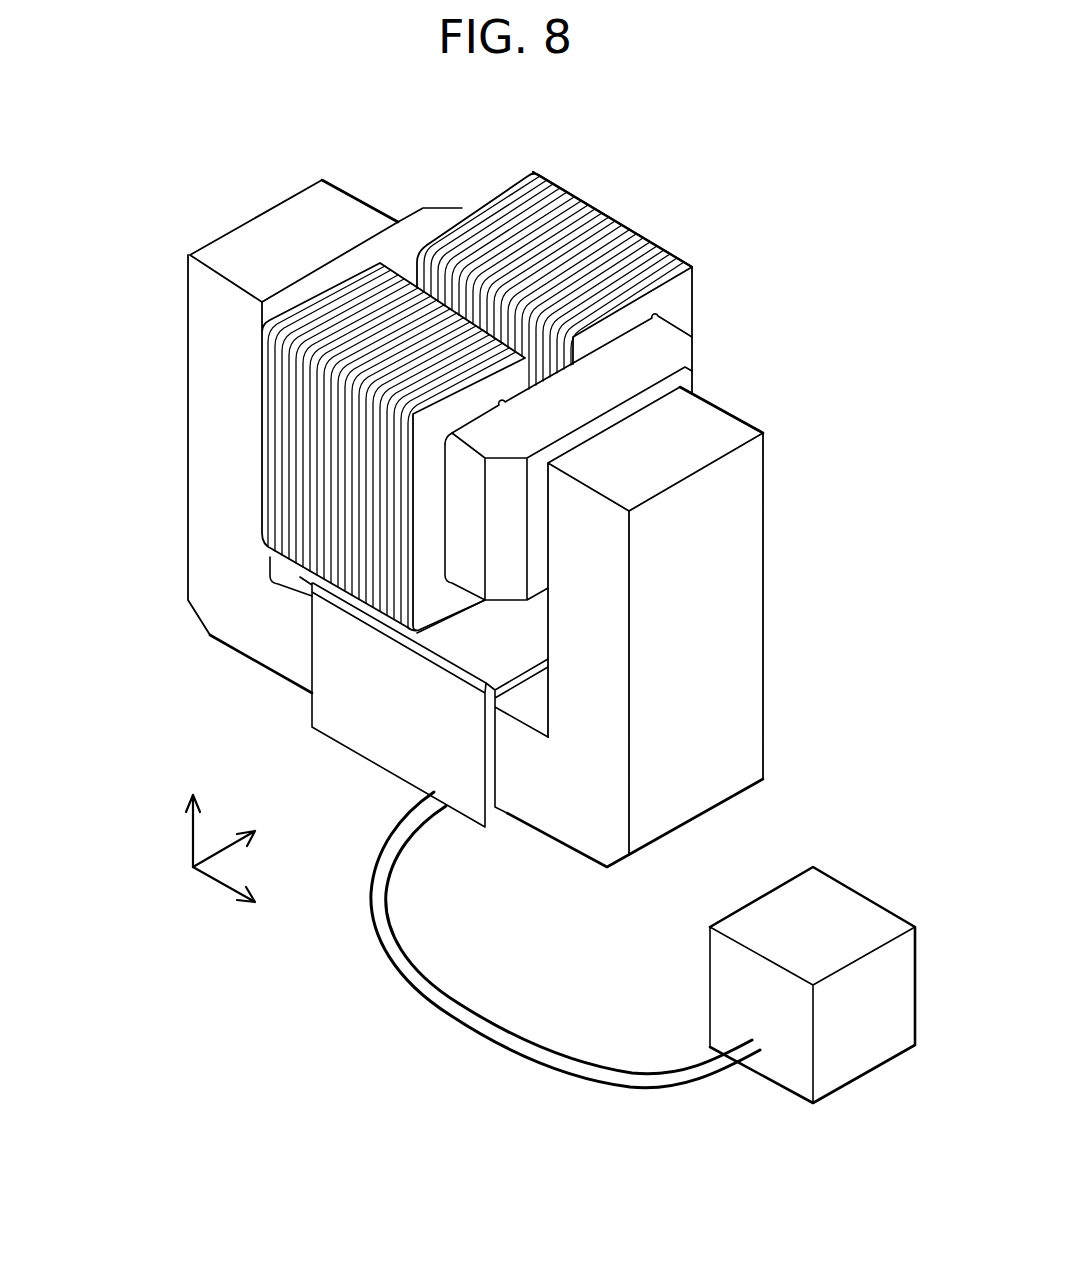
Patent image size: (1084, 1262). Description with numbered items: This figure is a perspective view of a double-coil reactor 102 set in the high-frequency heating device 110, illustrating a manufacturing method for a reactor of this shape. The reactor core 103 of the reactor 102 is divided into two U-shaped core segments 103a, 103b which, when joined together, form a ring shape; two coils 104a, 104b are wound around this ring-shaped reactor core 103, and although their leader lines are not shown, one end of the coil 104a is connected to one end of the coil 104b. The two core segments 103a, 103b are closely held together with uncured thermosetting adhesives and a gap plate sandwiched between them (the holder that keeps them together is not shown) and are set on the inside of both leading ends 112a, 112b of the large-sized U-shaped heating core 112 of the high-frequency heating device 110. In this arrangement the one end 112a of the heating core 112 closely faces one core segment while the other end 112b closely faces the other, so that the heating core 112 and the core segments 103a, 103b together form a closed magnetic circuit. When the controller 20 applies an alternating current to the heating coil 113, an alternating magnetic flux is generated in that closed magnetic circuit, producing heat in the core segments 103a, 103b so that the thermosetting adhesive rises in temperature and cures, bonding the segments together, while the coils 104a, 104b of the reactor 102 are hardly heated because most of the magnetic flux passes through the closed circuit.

The reactor 102 is at (688, 188).
The reactor core 103 is at (561, 390).
The core segment 103a is at (412, 227).
The core segment 103b is at (662, 342).
The coil 104a is at (588, 223).
The coil 104b is at (307, 468).
The high-frequency heating device 110 is at (152, 643).
The heating core 112 is at (262, 641).
The end of heating core 112a is at (295, 215).
The end of heating core 112b is at (713, 423).
The heating coil 113 is at (398, 750).
The controller 20 is at (722, 986).